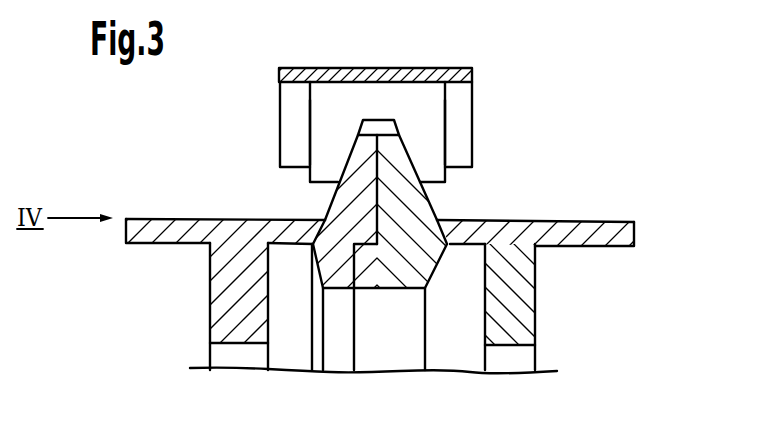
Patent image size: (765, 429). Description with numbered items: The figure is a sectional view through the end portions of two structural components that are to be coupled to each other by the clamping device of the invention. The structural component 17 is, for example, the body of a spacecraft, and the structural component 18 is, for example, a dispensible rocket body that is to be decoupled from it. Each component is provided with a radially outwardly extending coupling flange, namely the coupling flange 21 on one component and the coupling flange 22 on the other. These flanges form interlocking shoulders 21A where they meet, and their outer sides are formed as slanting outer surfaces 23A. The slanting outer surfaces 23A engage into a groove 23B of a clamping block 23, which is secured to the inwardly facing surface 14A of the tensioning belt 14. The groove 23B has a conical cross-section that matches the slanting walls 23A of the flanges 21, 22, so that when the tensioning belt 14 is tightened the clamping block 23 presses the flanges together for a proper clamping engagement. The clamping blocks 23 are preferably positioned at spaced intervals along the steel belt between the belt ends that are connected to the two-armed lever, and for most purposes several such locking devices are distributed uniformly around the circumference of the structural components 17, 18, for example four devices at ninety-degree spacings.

The tensioning belt 14 is at (417, 73).
The inwardly facing surface of the tensioning belt 14A is at (293, 122).
The structural component 17 is at (620, 248).
The structural component 18 is at (167, 227).
The coupling flange 21 is at (412, 212).
The interlocking shoulder 21A is at (368, 246).
The coupling flange 22 is at (338, 202).
The clamping block 23 is at (428, 140).
The slanting outer surface 23A is at (352, 148).
The groove 23B is at (378, 127).